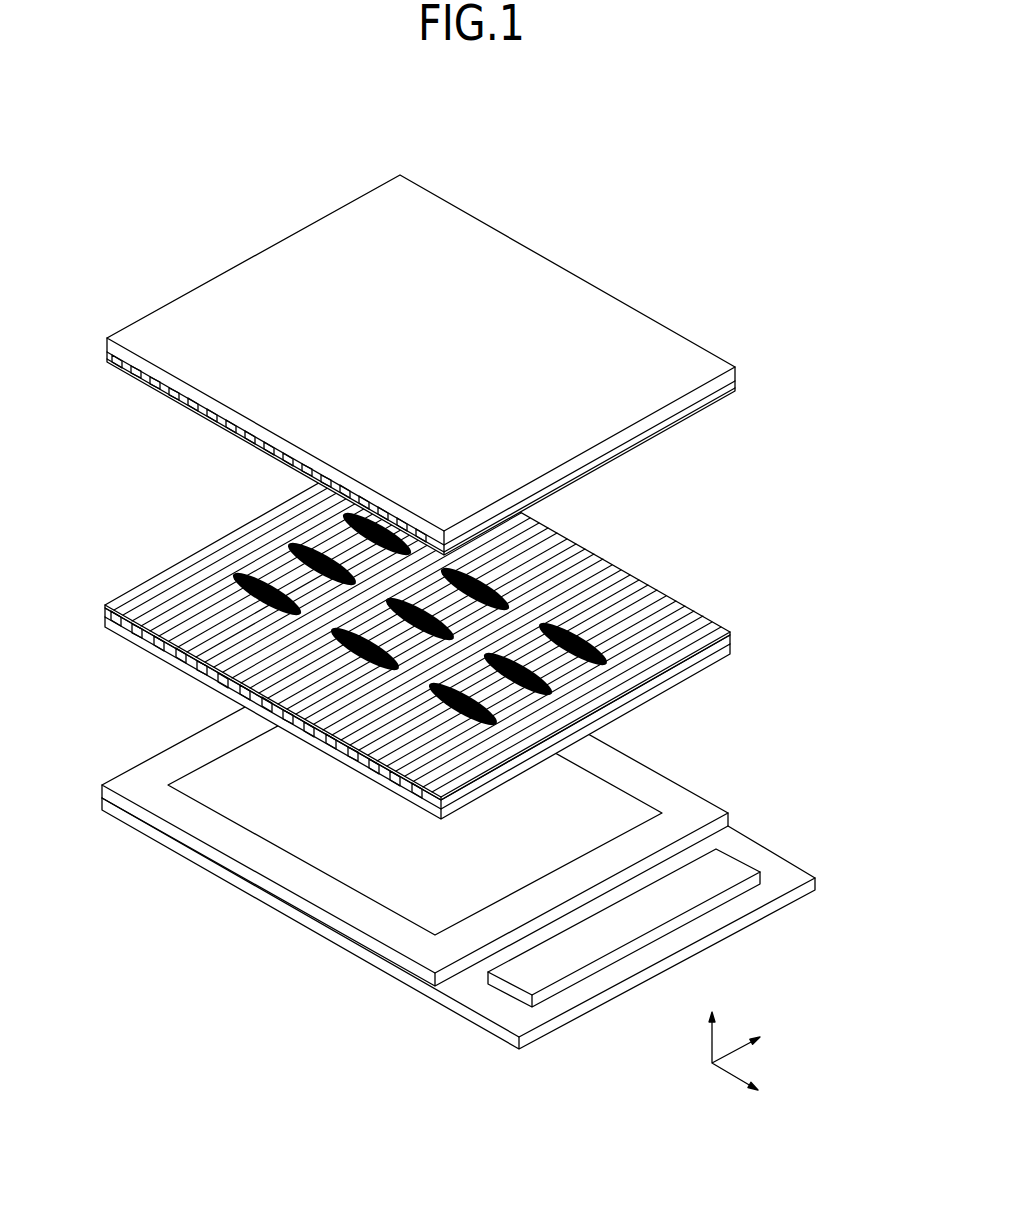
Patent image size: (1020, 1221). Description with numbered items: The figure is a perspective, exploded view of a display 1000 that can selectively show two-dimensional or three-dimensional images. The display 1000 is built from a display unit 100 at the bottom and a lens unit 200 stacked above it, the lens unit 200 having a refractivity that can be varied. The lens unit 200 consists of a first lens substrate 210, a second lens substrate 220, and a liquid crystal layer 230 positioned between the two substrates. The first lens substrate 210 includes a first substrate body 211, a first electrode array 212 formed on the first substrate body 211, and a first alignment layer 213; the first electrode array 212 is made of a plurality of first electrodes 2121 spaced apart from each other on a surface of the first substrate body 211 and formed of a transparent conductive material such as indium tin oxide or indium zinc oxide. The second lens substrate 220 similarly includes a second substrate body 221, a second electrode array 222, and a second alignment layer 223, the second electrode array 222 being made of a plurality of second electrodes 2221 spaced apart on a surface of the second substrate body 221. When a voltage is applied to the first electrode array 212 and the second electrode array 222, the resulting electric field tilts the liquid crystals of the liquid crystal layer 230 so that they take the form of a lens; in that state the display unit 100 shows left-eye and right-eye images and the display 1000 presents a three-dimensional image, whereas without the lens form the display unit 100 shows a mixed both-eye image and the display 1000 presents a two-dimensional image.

The display 1000 is at (584, 160).
The display unit 100 is at (683, 805).
The lens unit 200 is at (424, 365).
The first lens substrate 210 is at (485, 629).
The first substrate body 211 is at (703, 663).
The first electrode array 212 is at (456, 684).
The first electrodes 2121 is at (655, 624).
The first alignment layer 213 is at (650, 593).
The second lens substrate 220 is at (403, 446).
The second substrate body 221 is at (421, 441).
The second electrodes 2221 is at (217, 424).
The second electrode array 222 is at (238, 438).
The second alignment layer 223 is at (272, 452).
The liquid crystal layer 230 is at (575, 626).